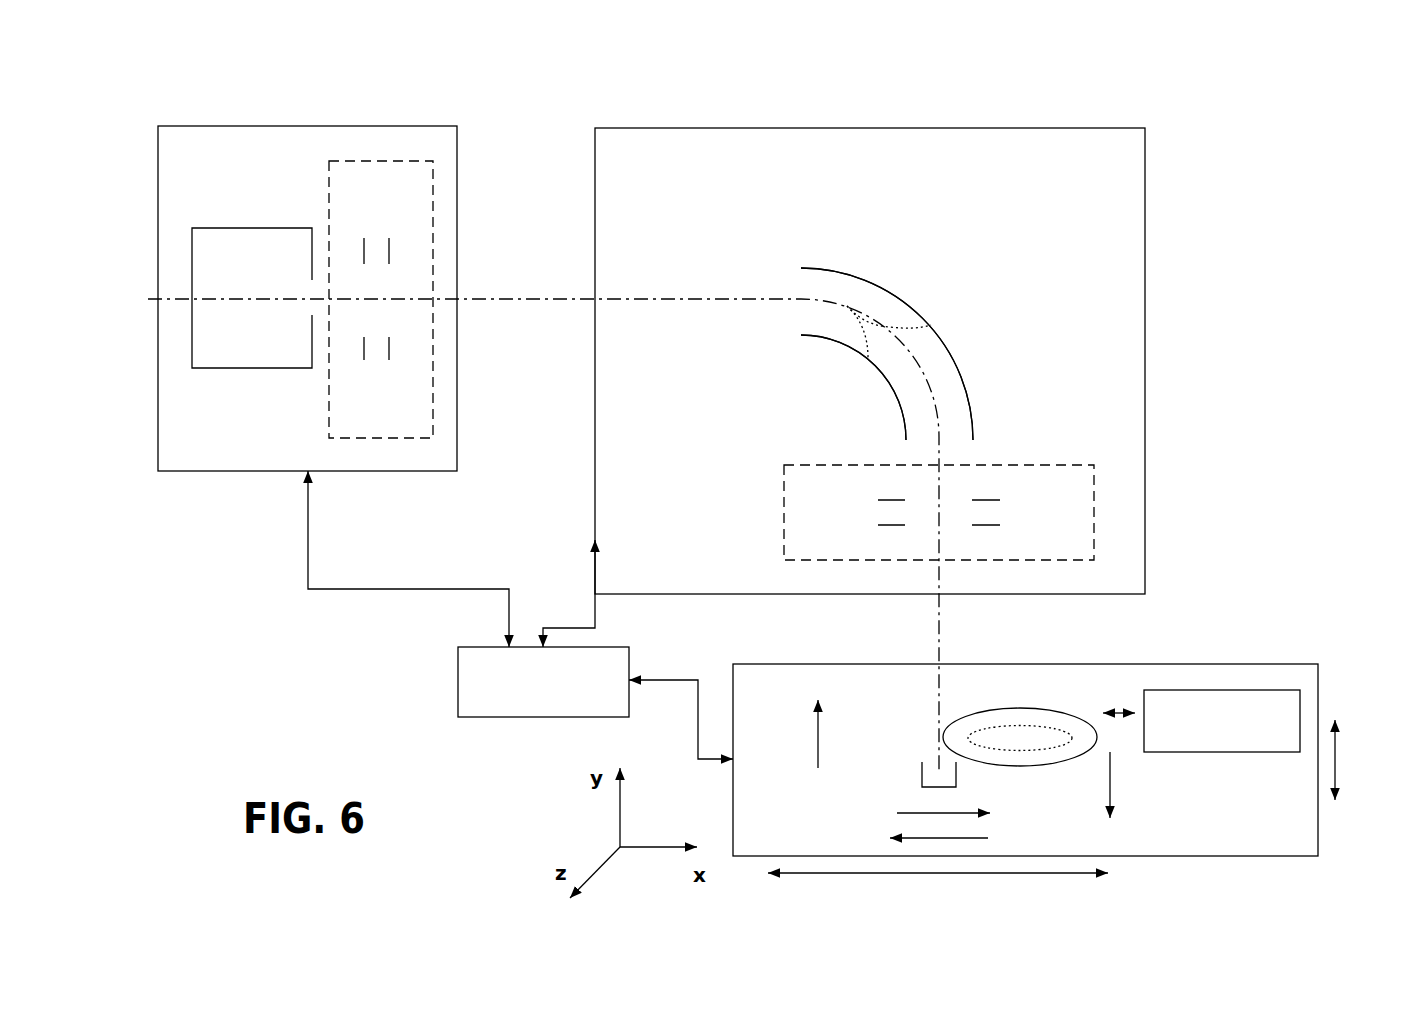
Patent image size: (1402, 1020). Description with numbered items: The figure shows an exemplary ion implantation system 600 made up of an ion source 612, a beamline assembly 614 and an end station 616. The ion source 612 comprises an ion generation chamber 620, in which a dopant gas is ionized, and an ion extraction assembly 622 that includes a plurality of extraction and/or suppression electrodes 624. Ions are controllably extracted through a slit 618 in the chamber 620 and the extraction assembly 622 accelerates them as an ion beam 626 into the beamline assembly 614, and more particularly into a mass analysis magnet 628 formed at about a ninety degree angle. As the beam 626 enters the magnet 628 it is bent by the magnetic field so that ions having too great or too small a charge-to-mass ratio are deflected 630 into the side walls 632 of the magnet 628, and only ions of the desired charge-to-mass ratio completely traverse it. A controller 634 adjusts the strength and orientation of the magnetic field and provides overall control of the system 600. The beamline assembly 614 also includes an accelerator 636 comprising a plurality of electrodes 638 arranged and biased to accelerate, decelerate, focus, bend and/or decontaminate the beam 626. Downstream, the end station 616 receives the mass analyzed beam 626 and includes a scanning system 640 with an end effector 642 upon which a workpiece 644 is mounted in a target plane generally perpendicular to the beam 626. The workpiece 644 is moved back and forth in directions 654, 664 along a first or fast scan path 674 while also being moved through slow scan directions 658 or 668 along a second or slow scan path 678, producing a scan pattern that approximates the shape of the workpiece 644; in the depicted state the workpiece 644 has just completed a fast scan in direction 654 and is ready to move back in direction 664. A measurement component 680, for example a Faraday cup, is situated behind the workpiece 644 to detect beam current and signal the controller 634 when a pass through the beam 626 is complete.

The ion implantation system 600 is at (838, 57).
The ion source 612 is at (365, 88).
The beamline assembly 614 is at (973, 107).
The end station 616 is at (1232, 630).
The slit 618 is at (297, 312).
The ion generation chamber 620 is at (236, 228).
The ion extraction assembly 622 is at (330, 196).
The extraction and/or suppression electrodes 624 is at (370, 226).
The ion beam 626 is at (500, 298).
The mass analysis magnet 628 is at (983, 298).
The deflected ions 630 is at (903, 328).
The side walls 632 is at (948, 374).
The controller 634 is at (458, 680).
The accelerator 636 is at (1044, 468).
The electrodes 638 is at (873, 500).
The scanning system 640 is at (1238, 752).
The end effector 642 is at (1037, 725).
The workpiece 644 is at (1018, 770).
The fast scan direction 654 is at (897, 813).
The slow scan direction 658 is at (815, 733).
The fast scan direction 664 is at (995, 838).
The slow scan direction 668 is at (1112, 793).
The first scan path 674 is at (938, 873).
The second scan path 678 is at (1337, 765).
The measurement component 680 is at (920, 770).